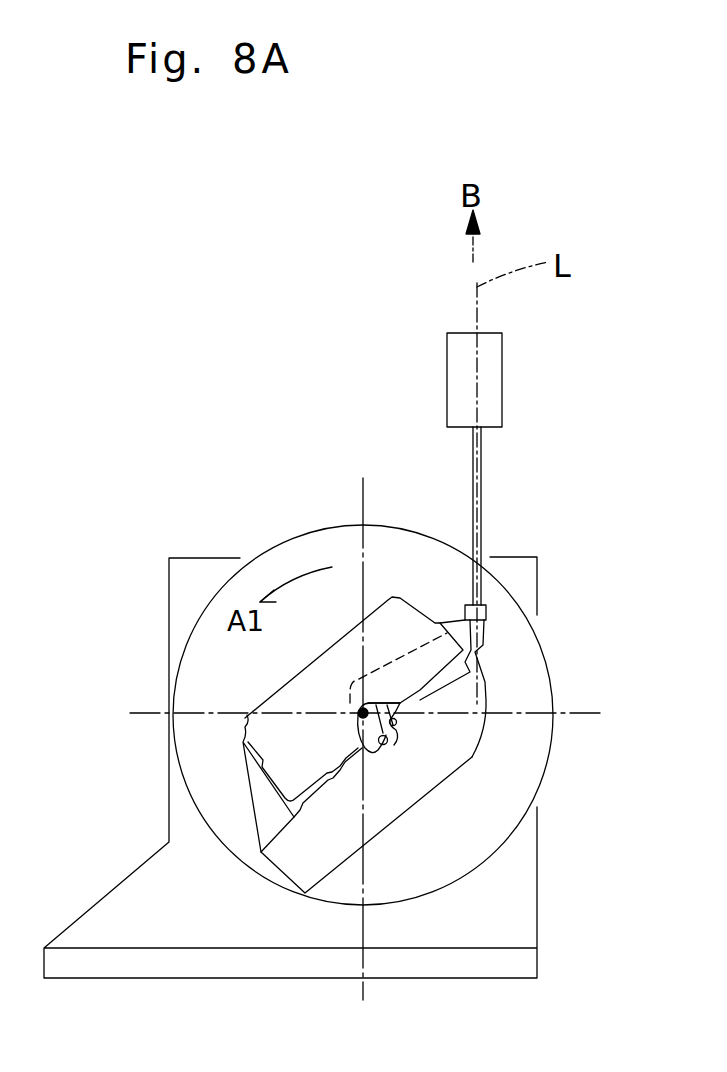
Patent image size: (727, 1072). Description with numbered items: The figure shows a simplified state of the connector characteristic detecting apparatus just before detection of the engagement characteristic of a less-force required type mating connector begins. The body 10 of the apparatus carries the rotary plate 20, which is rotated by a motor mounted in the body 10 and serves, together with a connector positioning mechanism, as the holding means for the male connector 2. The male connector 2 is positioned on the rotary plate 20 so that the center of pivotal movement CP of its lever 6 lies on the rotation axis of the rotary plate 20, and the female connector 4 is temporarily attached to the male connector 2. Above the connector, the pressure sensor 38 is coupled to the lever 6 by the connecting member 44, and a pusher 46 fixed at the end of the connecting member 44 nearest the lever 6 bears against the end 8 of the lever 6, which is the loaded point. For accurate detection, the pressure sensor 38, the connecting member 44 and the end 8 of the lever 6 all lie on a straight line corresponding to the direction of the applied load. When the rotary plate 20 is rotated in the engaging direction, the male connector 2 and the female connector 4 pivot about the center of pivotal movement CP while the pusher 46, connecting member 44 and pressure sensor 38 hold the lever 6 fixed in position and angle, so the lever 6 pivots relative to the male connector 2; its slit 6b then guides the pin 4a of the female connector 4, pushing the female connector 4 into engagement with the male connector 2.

The male connector 2 is at (393, 598).
The female connector 4 is at (447, 753).
The pin 4a is at (383, 748).
The lever 6 is at (430, 710).
The slit 6b is at (402, 722).
The end of the lever 8 is at (492, 628).
The body 10 is at (127, 897).
The rotary plate 20 is at (297, 552).
The pressure sensor 38 is at (497, 390).
The connecting member 44 is at (482, 500).
The pusher 46 is at (490, 610).
The center of pivotal movement CP is at (358, 712).